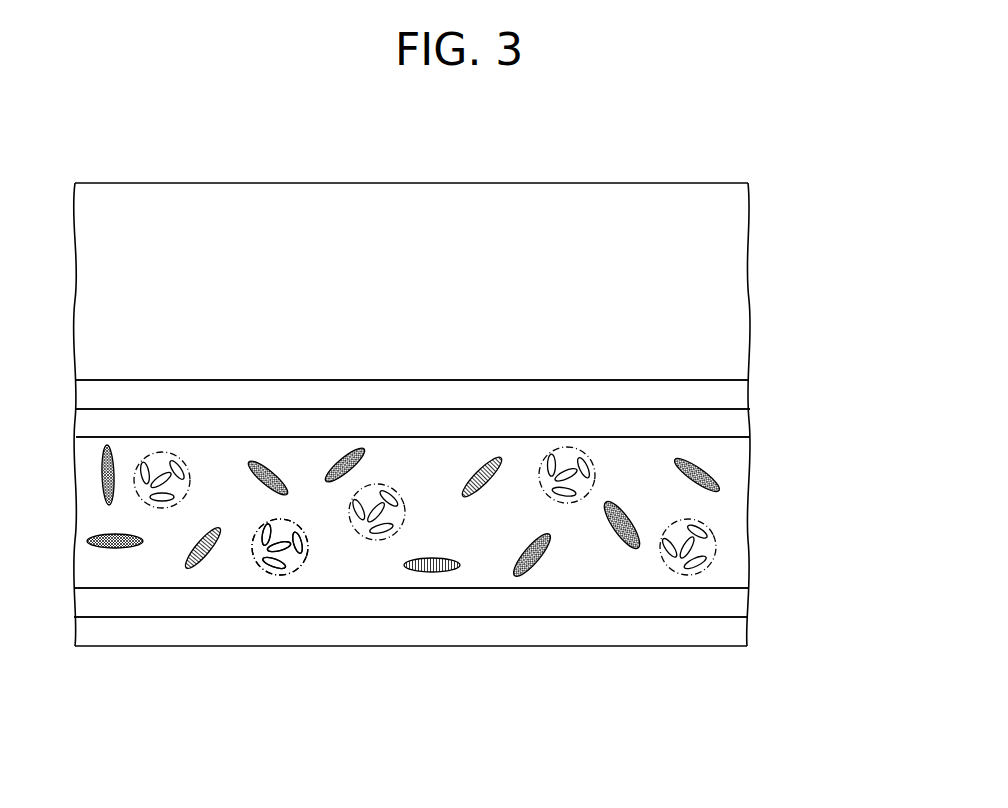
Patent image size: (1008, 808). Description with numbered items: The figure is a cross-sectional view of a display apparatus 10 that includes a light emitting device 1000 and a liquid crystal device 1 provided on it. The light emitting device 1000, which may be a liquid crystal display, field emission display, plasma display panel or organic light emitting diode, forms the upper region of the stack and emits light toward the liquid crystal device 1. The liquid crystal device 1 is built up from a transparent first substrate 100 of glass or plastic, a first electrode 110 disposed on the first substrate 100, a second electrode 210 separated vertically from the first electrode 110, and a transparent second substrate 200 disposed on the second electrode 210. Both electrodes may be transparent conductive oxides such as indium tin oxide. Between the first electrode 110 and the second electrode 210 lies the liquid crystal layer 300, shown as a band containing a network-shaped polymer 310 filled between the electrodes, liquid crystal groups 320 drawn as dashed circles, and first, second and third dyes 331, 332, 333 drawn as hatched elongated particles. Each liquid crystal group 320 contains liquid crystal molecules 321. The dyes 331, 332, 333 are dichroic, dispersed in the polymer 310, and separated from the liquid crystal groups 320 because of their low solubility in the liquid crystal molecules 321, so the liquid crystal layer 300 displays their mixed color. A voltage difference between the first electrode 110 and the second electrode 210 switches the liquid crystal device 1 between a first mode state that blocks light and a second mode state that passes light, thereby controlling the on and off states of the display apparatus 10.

The display apparatus 10 is at (684, 117).
The liquid crystal device 1 is at (828, 383).
The light emitting device 1000 is at (735, 279).
The second substrate 200 is at (735, 393).
The second electrode 210 is at (735, 421).
The liquid crystal layer 300 is at (630, 712).
The polymer 310 is at (233, 573).
The liquid crystal groups 320 is at (307, 563).
The liquid crystal molecules 321 is at (305, 528).
The first dye 331 is at (430, 572).
The second dye 332 is at (538, 563).
The third dye 333 is at (615, 532).
The first electrode 110 is at (735, 601).
The first substrate 100 is at (735, 629).